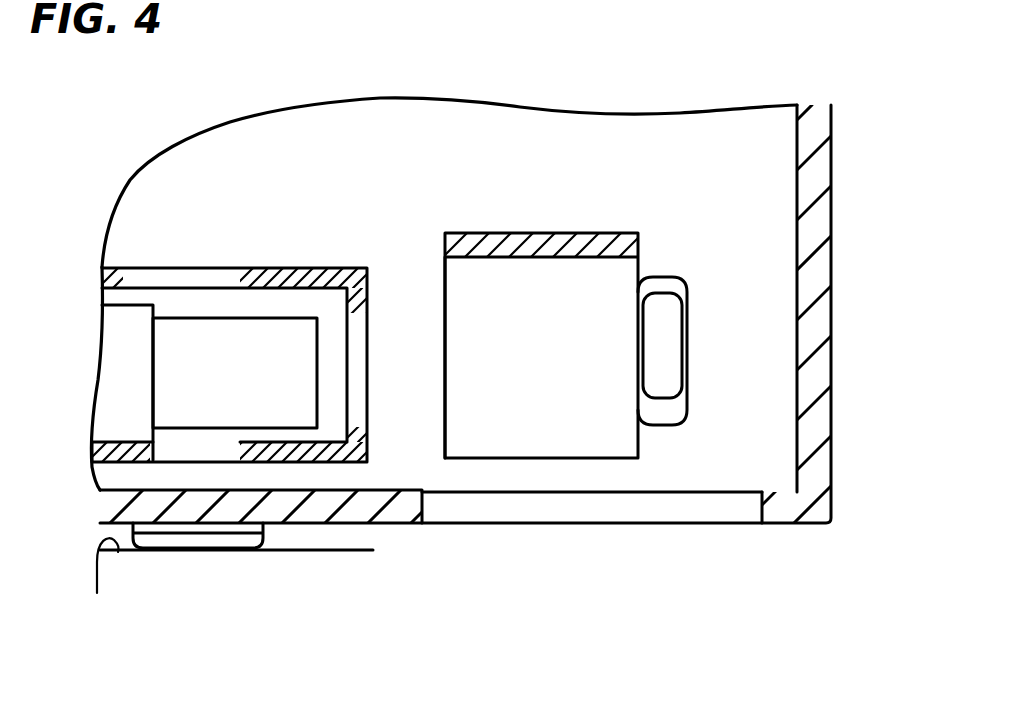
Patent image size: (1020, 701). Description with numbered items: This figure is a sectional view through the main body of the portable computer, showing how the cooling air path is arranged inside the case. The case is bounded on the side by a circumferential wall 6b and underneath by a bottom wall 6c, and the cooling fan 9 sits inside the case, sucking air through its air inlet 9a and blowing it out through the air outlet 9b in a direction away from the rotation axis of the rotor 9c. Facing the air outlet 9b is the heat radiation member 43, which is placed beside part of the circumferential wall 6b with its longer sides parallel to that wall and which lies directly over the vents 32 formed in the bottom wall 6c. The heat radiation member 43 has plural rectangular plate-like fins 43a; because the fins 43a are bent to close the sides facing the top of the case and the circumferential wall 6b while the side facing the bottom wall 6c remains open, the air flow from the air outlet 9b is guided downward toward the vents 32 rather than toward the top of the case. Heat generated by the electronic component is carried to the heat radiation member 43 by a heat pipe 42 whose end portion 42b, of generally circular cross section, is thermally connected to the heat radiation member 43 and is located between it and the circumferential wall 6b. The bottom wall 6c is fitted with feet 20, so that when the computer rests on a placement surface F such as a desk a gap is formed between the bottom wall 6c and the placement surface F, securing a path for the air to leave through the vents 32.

The circumferential wall 6b is at (822, 123).
The bottom wall 6c is at (153, 496).
The feet 20 is at (193, 542).
The vents 32 is at (500, 523).
The cooling fan 9 is at (310, 272).
The air inlet 9a is at (243, 278).
The air outlet 9b is at (357, 318).
The rotor 9c is at (112, 311).
The heat radiation member 43 is at (558, 238).
The fins 43a is at (452, 293).
The heat pipe 42 is at (682, 322).
The other end portion of heat pipe 42b is at (658, 278).
The placement surface F is at (102, 579).